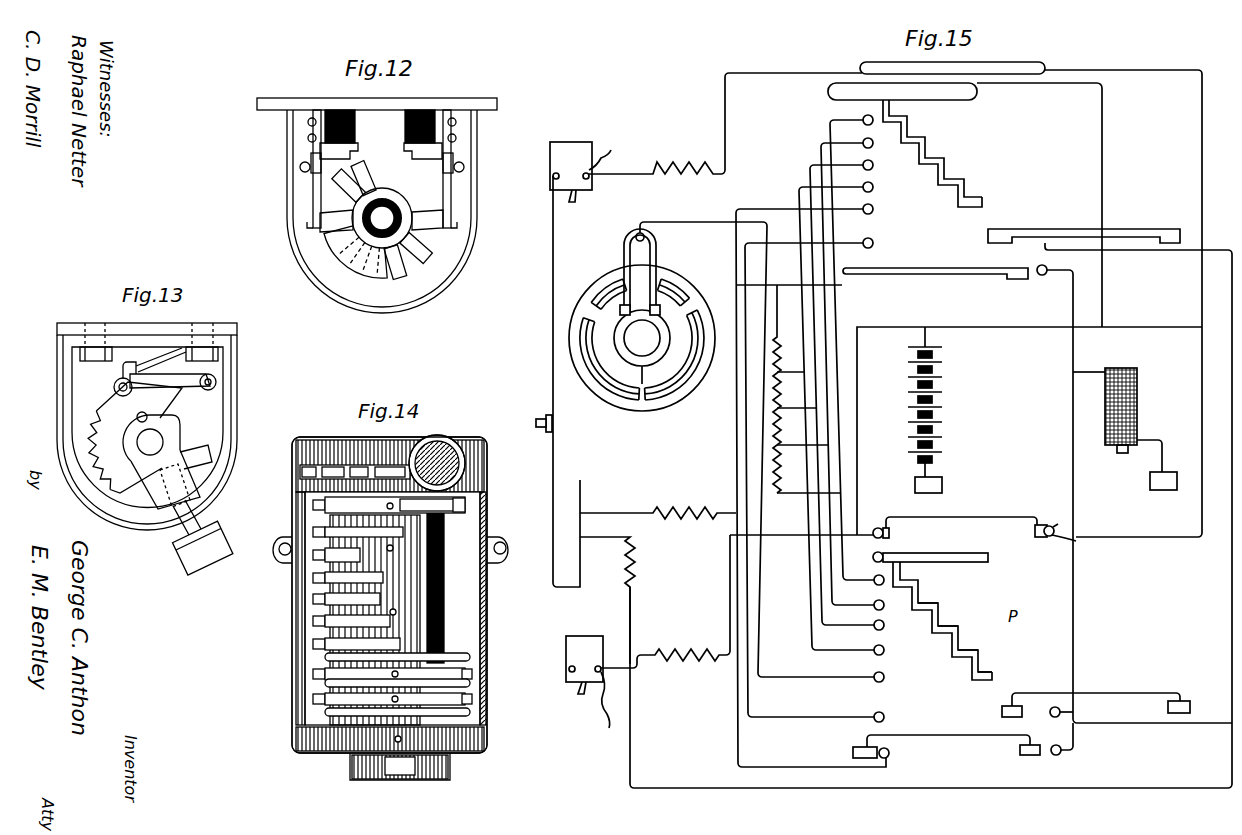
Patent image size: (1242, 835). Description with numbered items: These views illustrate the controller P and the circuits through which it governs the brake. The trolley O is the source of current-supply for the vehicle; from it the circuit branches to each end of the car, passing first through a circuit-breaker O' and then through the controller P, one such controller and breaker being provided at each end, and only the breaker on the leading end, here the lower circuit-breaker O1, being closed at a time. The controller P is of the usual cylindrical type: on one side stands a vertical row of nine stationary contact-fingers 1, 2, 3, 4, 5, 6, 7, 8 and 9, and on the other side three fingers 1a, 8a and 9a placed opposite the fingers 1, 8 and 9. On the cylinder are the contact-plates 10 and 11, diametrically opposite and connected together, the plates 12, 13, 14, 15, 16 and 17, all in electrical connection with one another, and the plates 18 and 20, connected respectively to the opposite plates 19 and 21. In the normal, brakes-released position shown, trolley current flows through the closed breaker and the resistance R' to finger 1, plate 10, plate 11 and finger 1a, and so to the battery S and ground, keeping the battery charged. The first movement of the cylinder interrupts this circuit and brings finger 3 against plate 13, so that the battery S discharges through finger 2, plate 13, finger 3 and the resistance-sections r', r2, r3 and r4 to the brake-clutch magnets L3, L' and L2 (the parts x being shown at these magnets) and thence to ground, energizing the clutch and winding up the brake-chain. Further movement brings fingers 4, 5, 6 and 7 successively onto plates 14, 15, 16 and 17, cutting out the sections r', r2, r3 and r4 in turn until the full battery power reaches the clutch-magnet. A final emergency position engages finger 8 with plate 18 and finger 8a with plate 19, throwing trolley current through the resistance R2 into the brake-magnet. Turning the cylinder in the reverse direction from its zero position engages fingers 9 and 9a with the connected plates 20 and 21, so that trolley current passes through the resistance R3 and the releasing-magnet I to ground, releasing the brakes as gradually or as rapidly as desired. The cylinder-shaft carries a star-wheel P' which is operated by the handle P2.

In FIG. 12, the stationary contact-finger 1 is at (309, 169).
In FIG. 14, the stationary contact-finger 1 is at (314, 507).
In FIG. 15, the stationary contact-finger 1 is at (874, 527).
In FIG. 12, the contact-finger 1a is at (453, 169).
In FIG. 14, the contact-finger 1a is at (462, 512).
In FIG. 15, the contact-finger 1a is at (1059, 518).
In FIG. 14, the stationary contact-finger 2 is at (314, 534).
In FIG. 15, the stationary contact-finger 2 is at (874, 552).
In FIG. 14, the stationary contact-finger 3 is at (314, 557).
In FIG. 15, the stationary contact-finger 3 is at (874, 575).
In FIG. 14, the stationary contact-finger 4 is at (314, 580).
In FIG. 15, the stationary contact-finger 4 is at (874, 600).
In FIG. 14, the stationary contact-finger 5 is at (314, 601).
In FIG. 15, the stationary contact-finger 5 is at (875, 620).
In FIG. 14, the stationary contact-finger 6 is at (314, 623).
In FIG. 15, the stationary contact-finger 6 is at (875, 645).
In FIG. 14, the stationary contact-finger 7 is at (314, 646).
In FIG. 15, the stationary contact-finger 7 is at (875, 671).
In FIG. 14, the stationary contact-finger 8 is at (314, 676).
In FIG. 15, the stationary contact-finger 8 is at (875, 711).
In FIG. 14, the contact-finger 8a is at (470, 668).
In FIG. 15, the contact-finger 8a is at (1063, 716).
In FIG. 14, the stationary contact-finger 9 is at (314, 701).
In FIG. 15, the stationary contact-finger 9 is at (887, 761).
In FIG. 14, the contact-finger 9a is at (470, 693).
In FIG. 15, the contact-finger 9a is at (1062, 748).
In FIG. 12, the contact-plate 10 is at (336, 221).
In FIG. 14, the contact-plate 10 is at (395, 505).
In FIG. 15, the contact-plate 10 is at (960, 535).
In FIG. 12, the contact-plate 11 is at (427, 220).
In FIG. 14, the contact-plate 11 is at (427, 506).
In FIG. 15, the contact-plate 11 is at (1054, 539).
In FIG. 12, the contact-plate 12 is at (383, 280).
In FIG. 14, the contact-plate 12 is at (364, 532).
In FIG. 15, the contact-plate 12 is at (944, 558).
In FIG. 14, the contact-plate 13 is at (342, 555).
In FIG. 15, the contact-plate 13 is at (942, 621).
In FIG. 14, the contact-plate 14 is at (375, 578).
In FIG. 15, the contact-plate 14 is at (934, 602).
In FIG. 14, the contact-plate 15 is at (375, 599).
In FIG. 15, the contact-plate 15 is at (954, 624).
In FIG. 14, the contact-plate 16 is at (385, 621).
In FIG. 15, the contact-plate 16 is at (975, 647).
In FIG. 14, the contact-plate 17 is at (396, 644).
In FIG. 15, the contact-plate 17 is at (995, 671).
In FIG. 12, the contact-plate 18 is at (397, 262).
In FIG. 14, the contact-plate 18 is at (395, 675).
In FIG. 15, the contact-plate 18 is at (1081, 708).
In FIG. 12, the contact-plate 19 is at (363, 178).
In FIG. 15, the contact-plate 19 is at (1188, 708).
In FIG. 12, the contact-plate 20 is at (349, 186).
In FIG. 15, the contact-plate 20 is at (930, 748).
In FIG. 12, the contact-plate 21 is at (416, 250).
In FIG. 15, the contact-plate 21 is at (1032, 742).
In FIG. 14, the controller P is at (379, 595).
In FIG. 15, the controller P is at (932, 153).
In FIG. 13, the star-wheel P' is at (135, 437).
In FIG. 13, the handle P2 is at (203, 548).
In FIG. 14, the handle P2 is at (462, 459).
In FIG. 15, the trolley O is at (537, 409).
In FIG. 15, the circuit-breaker O' is at (580, 172).
In FIG. 15, the circuit-breaker O1 is at (588, 682).
In FIG. 15, the armature legs x is at (665, 255).
In FIG. 15, the brake-clutch magnet L' is at (642, 333).
In FIG. 15, the brake-clutch magnet L2 is at (600, 370).
In FIG. 15, the brake-clutch magnet L3 is at (684, 370).
In FIG. 15, the resistance R' is at (665, 601).
In FIG. 15, the resistance R2 is at (619, 600).
In FIG. 15, the resistance R3 is at (658, 501).
In FIG. 15, the resistance-section r' is at (769, 389).
In FIG. 15, the resistance-section r2 is at (792, 431).
In FIG. 15, the resistance-section r3 is at (786, 394).
In FIG. 15, the resistance-section r4 is at (798, 419).
In FIG. 15, the battery S is at (934, 410).
In FIG. 15, the releasing-magnet I is at (1125, 429).